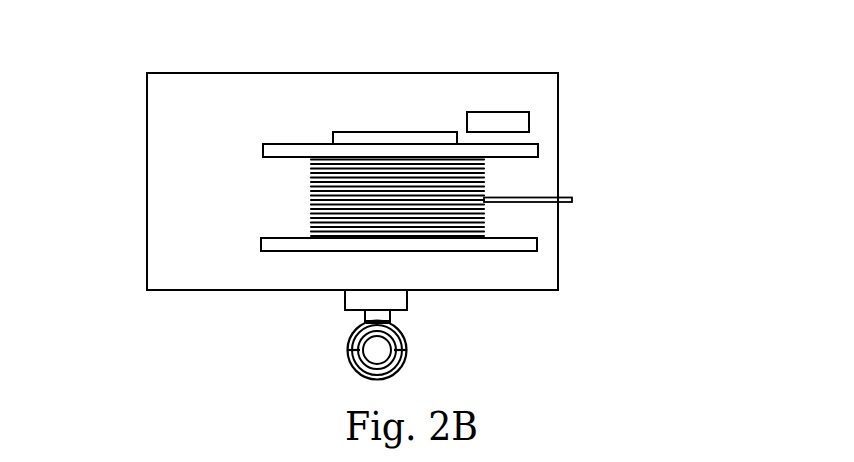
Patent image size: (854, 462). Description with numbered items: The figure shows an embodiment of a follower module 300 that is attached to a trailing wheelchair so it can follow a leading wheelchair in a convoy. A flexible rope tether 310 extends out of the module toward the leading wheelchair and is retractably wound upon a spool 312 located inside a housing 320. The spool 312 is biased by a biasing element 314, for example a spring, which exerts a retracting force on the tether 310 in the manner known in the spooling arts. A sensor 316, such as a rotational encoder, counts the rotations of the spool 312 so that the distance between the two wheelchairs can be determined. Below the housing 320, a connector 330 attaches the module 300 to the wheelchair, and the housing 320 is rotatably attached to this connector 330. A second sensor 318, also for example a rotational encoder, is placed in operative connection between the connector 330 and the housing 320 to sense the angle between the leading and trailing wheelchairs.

The follower module 300 is at (523, 283).
The rope tether 310 is at (576, 213).
The spool 312 is at (283, 143).
The biasing element 314 is at (385, 130).
The sensor 316 is at (507, 108).
The second sensor 318 is at (345, 303).
The housing 320 is at (145, 140).
The connector 330 is at (413, 353).